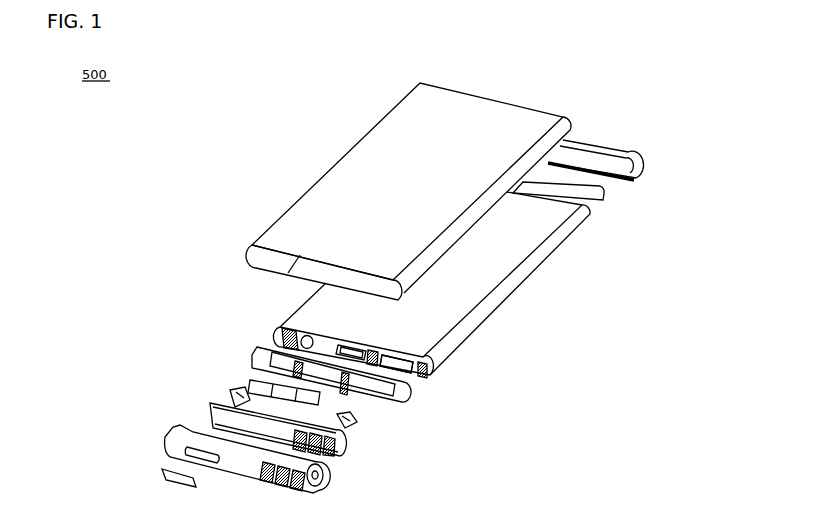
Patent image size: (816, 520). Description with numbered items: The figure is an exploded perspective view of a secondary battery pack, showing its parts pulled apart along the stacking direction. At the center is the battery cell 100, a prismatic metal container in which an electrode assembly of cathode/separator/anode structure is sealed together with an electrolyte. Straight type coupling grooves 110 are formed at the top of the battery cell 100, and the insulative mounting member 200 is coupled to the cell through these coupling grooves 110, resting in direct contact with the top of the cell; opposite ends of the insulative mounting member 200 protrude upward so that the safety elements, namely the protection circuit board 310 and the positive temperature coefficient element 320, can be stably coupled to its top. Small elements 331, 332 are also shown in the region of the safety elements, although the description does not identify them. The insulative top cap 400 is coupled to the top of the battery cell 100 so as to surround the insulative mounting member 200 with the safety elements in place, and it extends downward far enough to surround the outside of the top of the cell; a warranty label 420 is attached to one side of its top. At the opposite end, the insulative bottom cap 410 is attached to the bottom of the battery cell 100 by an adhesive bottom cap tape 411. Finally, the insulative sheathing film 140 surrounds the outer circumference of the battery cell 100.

The sheathing film 140 is at (317, 183).
The insulative bottom cap 410 is at (600, 141).
The adhesive bottom cap tape 411 is at (605, 200).
The battery cell 100 is at (513, 297).
The coupling grooves 110 is at (433, 377).
The insulative mounting member 200 is at (410, 400).
The positive temperature coefficient (PTC) element 320 is at (250, 382).
The first hook 331 is at (240, 390).
The second hook 332 is at (357, 422).
The protection circuit board 310 is at (333, 450).
The insulative top cap 400 is at (167, 445).
The warranty label 420 is at (160, 475).